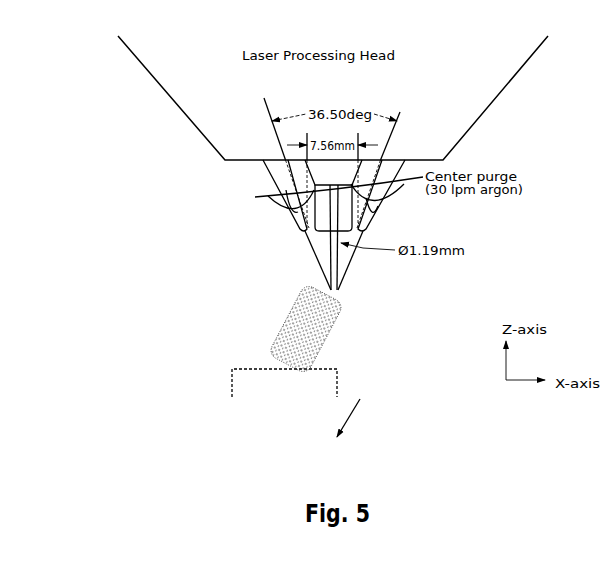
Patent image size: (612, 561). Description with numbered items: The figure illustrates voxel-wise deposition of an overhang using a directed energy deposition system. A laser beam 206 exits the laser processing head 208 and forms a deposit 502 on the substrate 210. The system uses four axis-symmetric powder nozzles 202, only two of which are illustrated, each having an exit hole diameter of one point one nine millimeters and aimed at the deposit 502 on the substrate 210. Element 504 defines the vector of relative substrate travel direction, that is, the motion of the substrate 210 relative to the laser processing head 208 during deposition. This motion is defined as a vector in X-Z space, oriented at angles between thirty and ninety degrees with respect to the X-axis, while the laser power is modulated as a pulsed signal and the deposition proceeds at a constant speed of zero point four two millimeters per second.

The powder nozzle 202 is at (299, 210).
The laser beam 206 is at (322, 257).
The laser processing head 208 is at (508, 86).
The substrate 210 is at (235, 369).
The deposit 502 is at (287, 333).
The vector of relative substrate travel direction 504 is at (425, 352).